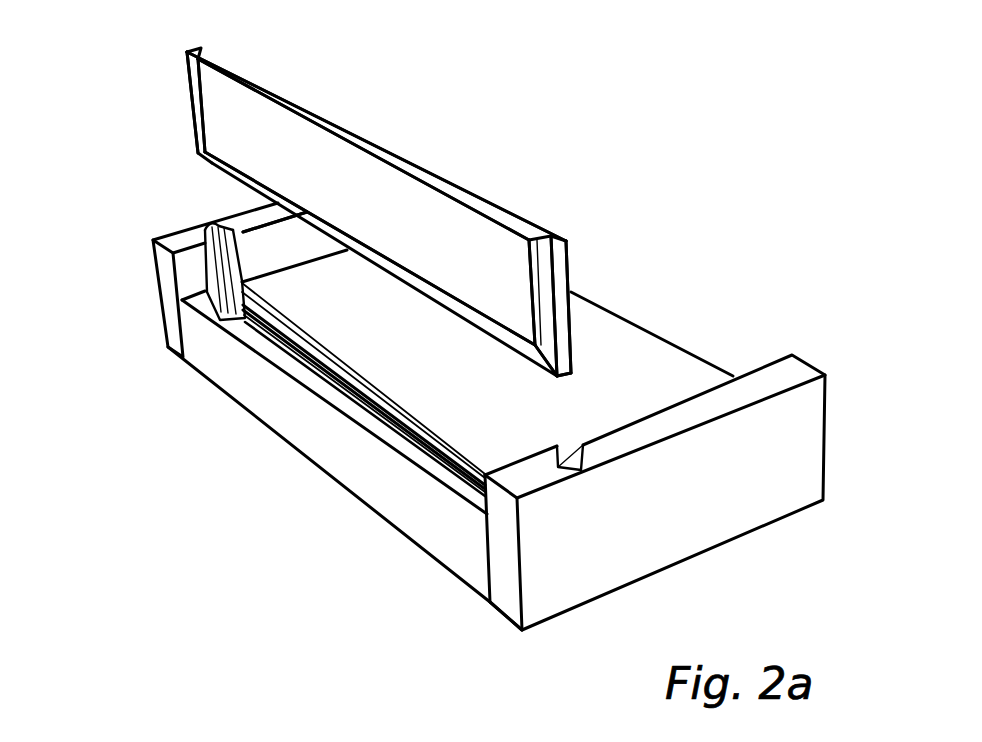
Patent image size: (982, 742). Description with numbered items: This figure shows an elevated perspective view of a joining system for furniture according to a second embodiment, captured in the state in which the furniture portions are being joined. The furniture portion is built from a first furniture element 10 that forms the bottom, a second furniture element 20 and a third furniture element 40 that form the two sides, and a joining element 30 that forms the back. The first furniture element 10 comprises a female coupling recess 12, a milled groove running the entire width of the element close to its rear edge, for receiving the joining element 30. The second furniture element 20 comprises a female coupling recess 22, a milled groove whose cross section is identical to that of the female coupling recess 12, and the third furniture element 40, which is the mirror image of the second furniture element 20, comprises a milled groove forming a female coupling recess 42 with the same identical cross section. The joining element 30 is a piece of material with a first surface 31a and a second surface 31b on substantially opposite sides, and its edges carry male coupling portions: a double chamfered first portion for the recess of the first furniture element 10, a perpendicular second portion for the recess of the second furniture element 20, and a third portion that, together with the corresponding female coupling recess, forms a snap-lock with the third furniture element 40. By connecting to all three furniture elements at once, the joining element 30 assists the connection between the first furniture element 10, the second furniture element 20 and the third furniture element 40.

The first furniture element 10 is at (443, 416).
The female coupling recess 12 is at (456, 464).
The second furniture element 20 is at (294, 247).
The female coupling recess 22 is at (219, 265).
The joining element 30 is at (318, 118).
The first surface 31a is at (433, 249).
The second surface 31b is at (411, 151).
The third furniture element 40 is at (655, 492).
The female coupling recess 42 is at (583, 369).